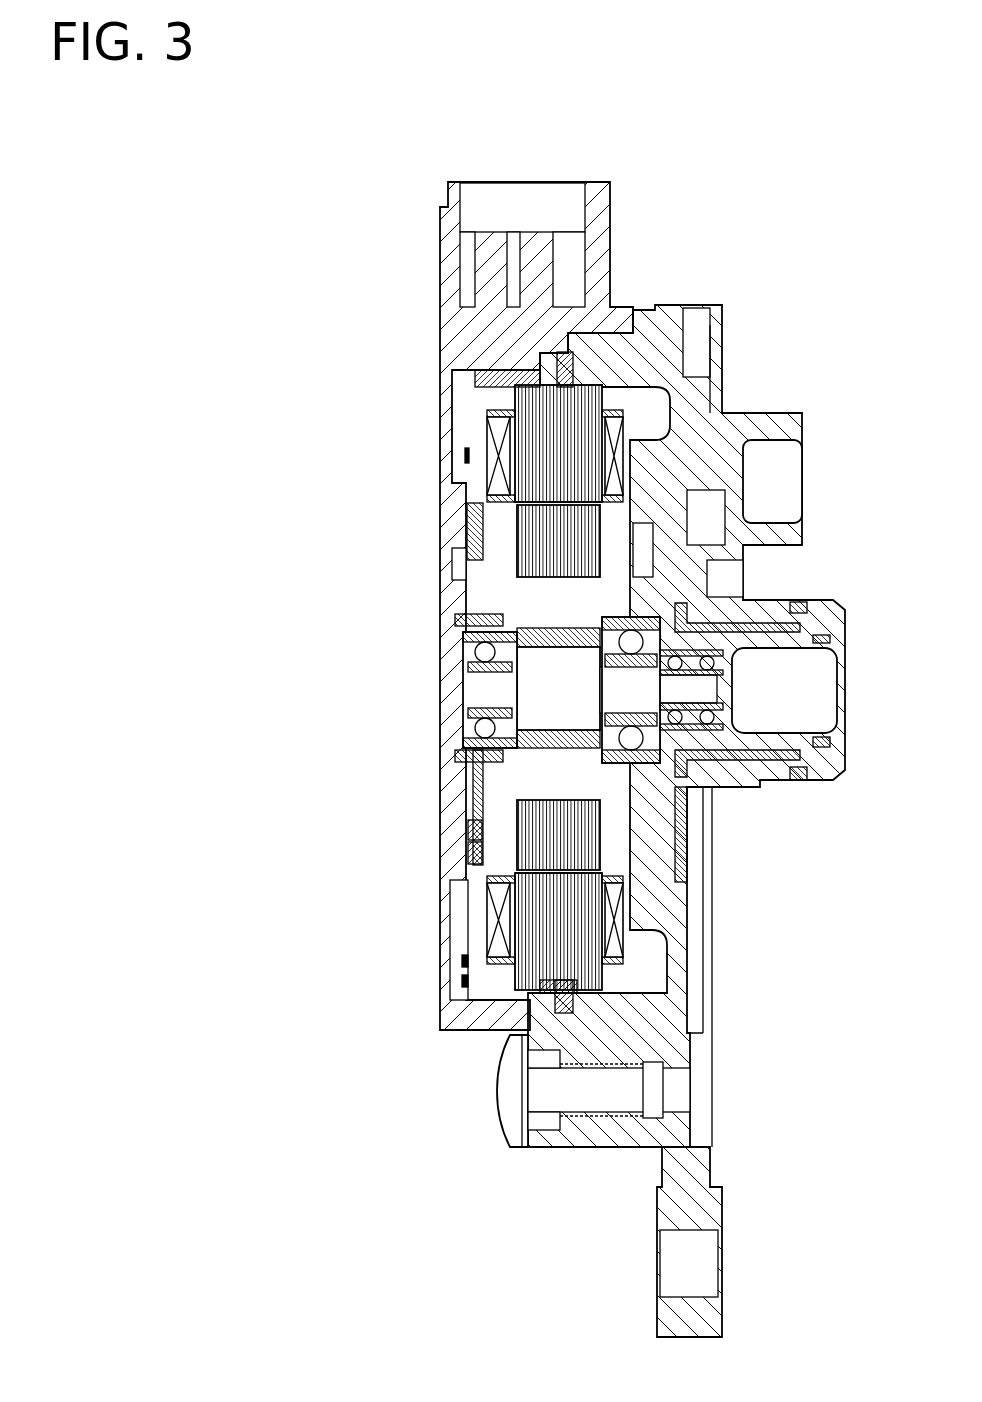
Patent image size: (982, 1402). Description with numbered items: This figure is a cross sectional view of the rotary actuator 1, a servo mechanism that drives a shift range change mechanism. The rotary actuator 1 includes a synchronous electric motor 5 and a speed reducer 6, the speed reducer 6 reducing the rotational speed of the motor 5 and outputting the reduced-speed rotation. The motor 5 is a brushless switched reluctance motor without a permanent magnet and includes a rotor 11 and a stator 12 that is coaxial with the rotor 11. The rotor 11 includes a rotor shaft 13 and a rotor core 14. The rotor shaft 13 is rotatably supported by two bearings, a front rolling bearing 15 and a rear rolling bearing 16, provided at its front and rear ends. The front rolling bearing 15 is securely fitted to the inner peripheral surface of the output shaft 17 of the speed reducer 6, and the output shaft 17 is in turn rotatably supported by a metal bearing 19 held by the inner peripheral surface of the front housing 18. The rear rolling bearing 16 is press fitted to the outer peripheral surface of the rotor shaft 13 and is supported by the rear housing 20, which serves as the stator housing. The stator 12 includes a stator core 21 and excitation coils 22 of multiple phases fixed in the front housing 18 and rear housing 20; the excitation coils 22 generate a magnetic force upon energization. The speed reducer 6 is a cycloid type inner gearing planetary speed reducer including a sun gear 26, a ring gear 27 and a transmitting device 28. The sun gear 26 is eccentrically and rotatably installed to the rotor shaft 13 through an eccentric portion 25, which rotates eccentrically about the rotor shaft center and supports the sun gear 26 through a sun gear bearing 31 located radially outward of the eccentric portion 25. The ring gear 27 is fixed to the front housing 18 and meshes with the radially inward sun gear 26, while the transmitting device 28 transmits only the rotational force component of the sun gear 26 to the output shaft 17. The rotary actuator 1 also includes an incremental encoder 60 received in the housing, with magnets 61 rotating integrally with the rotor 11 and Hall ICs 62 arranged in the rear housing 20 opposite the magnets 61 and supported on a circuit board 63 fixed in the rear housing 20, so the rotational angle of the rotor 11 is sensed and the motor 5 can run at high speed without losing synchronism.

The rotary actuator 1 is at (358, 298).
The synchronous electric motor 5 is at (262, 402).
The speed reducer 6 is at (674, 726).
The rotor 11 is at (325, 497).
The stator 12 is at (325, 385).
The rotor shaft 13 is at (535, 632).
The rotor core 14 is at (530, 545).
The front rolling bearing 15 is at (640, 612).
The rear rolling bearing 16 is at (470, 648).
The output shaft 17 is at (739, 813).
The front housing 18 is at (667, 1035).
The metal bearing 19 is at (777, 603).
The rear housing 20 is at (437, 1030).
The stator core 21 is at (533, 432).
The excitation coils 22 is at (492, 458).
The eccentric portion 25 is at (710, 790).
The sun gear 26 is at (707, 913).
The ring gear 27 is at (710, 957).
The transmitting device 28 is at (703, 857).
The sun gear bearing 31 is at (705, 540).
The encoder 60 is at (322, 795).
The magnets 61 is at (470, 843).
The Hall ICs 62 is at (470, 822).
The circuit board 63 is at (442, 768).